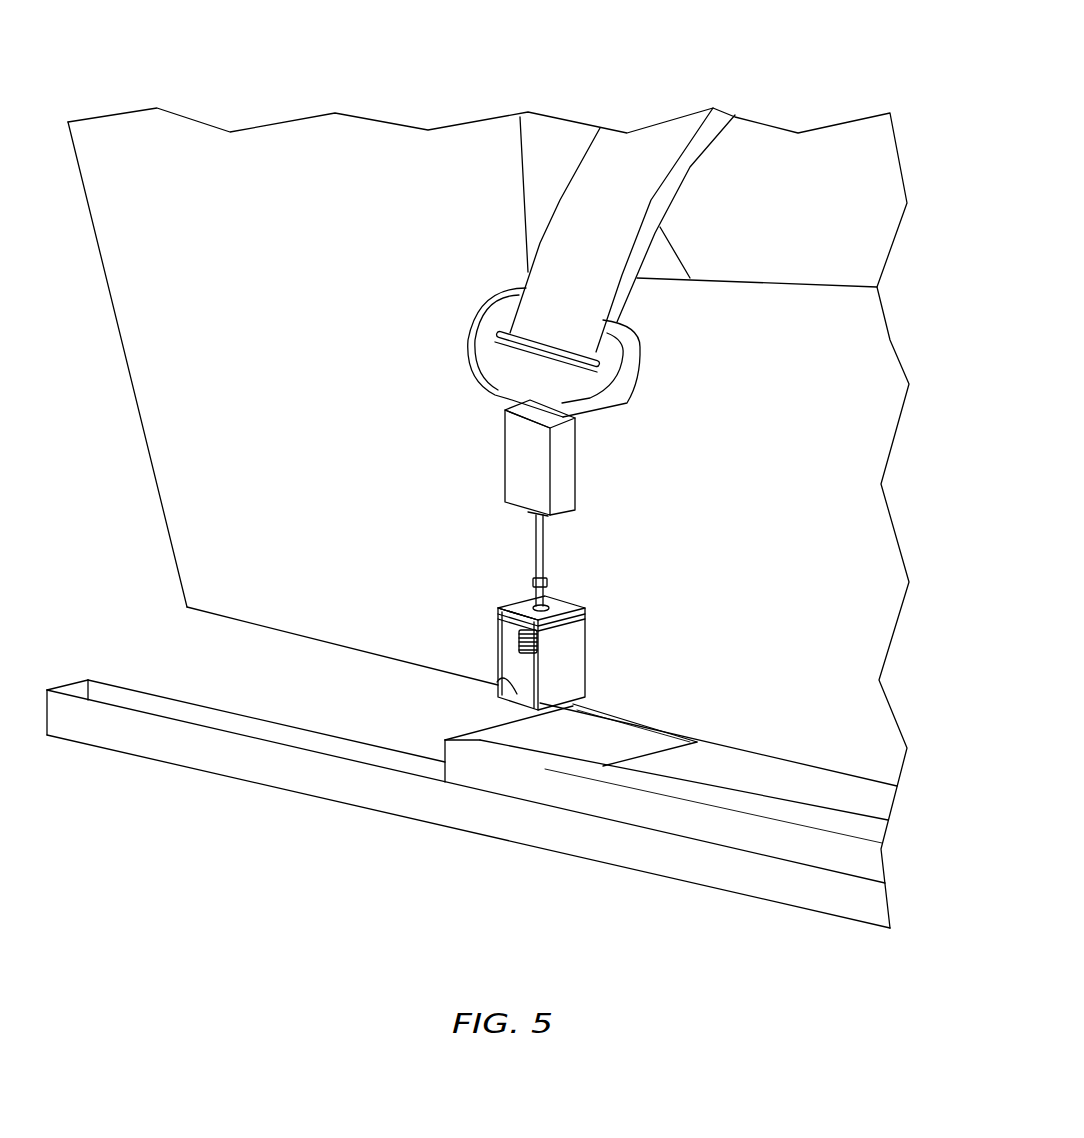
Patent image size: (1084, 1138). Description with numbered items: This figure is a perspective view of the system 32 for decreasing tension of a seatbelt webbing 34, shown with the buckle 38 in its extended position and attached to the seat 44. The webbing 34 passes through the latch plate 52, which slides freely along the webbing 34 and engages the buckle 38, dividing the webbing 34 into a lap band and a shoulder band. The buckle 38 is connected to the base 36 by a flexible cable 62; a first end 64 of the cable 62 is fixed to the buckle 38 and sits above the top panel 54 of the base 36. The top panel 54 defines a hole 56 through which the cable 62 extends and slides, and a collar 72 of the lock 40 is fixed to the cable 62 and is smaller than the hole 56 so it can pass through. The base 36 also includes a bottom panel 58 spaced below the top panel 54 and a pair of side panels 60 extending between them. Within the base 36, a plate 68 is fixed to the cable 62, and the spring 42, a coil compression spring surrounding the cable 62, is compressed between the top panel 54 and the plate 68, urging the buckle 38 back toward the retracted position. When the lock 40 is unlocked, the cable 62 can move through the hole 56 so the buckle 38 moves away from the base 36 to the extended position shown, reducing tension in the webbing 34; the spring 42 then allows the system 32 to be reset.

The system 32 is at (430, 433).
The seatbelt webbing 34 is at (602, 208).
The base 36 is at (600, 652).
The buckle 38 is at (567, 470).
The lock 40 is at (585, 623).
The spring 42 is at (520, 637).
The seat 44 is at (816, 519).
The latch plate 52 is at (655, 350).
The top panel 54 is at (517, 607).
The hole 56 is at (550, 606).
The bottom panel 58 is at (492, 684).
The side panel 60 is at (498, 663).
The cable 62 is at (543, 557).
The first end 64 is at (537, 515).
The plate 68 is at (528, 653).
The collar 72 is at (533, 582).